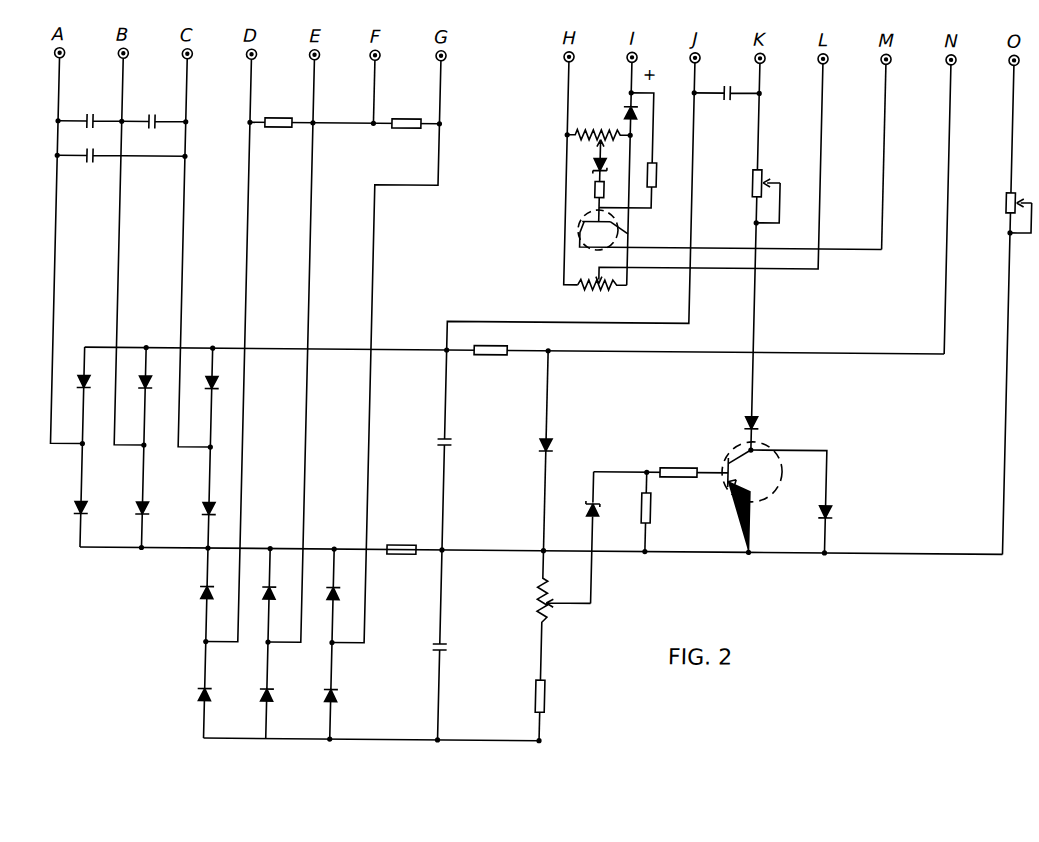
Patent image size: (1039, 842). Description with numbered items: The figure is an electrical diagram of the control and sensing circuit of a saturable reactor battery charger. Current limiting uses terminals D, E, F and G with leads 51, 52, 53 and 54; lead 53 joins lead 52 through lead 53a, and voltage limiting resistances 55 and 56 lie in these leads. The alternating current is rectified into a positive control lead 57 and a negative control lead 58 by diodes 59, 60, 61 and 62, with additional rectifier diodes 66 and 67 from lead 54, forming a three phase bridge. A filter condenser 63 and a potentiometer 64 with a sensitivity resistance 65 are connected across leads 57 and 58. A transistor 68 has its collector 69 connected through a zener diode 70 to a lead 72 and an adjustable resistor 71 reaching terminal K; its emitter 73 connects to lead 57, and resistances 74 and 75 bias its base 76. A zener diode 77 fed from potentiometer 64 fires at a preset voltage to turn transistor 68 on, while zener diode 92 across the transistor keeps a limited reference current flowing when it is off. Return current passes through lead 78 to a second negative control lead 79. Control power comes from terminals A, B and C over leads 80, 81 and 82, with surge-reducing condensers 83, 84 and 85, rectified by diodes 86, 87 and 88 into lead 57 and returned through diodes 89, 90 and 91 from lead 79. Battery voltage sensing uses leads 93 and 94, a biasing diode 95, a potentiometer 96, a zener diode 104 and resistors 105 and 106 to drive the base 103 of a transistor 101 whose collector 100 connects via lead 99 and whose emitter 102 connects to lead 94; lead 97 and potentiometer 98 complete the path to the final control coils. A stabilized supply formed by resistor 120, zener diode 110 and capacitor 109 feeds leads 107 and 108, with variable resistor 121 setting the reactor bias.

The lead 51 is at (244, 170).
The lead 52 is at (306, 185).
The lead 53 is at (367, 87).
The lead 53a is at (346, 126).
The lead 54 is at (433, 160).
The voltage limiting resistance 55 is at (276, 130).
The voltage limiting resistance 56 is at (396, 130).
The positive control lead 57 is at (478, 552).
The negative control lead 58 is at (310, 742).
The diode 59 is at (205, 592).
The diode 60 is at (270, 592).
The diode 61 is at (267, 697).
The diode 62 is at (204, 697).
The filter condenser 63 is at (450, 653).
The potentiometer 64 is at (541, 604).
The resistance 65 is at (542, 693).
The rectifier diode 66 is at (334, 592).
The rectifier diode 67 is at (331, 697).
The transistor 68 is at (785, 470).
The collector 69 is at (737, 452).
The zener diode 70 is at (758, 417).
The resistor 71 is at (746, 189).
The lead 72 is at (752, 312).
The emitter 73 is at (740, 491).
The resistance 74 is at (643, 508).
The resistance 75 is at (678, 476).
The base 76 is at (732, 472).
The zener diode 77 is at (590, 512).
The lead 78 is at (580, 322).
The second negative control lead 79 is at (388, 352).
The lead 80 is at (50, 240).
The lead 81 is at (114, 240).
The lead 82 is at (178, 240).
The condenser 83 is at (80, 120).
The condenser 84 is at (149, 121).
The condenser 85 is at (82, 163).
The diode 86 is at (78, 516).
The diode 87 is at (141, 516).
The diode 88 is at (207, 516).
The diode 89 is at (86, 391).
The diode 90 is at (148, 391).
The diode 91 is at (209, 391).
The zener diode 92 is at (834, 506).
The lead 93 is at (561, 86).
The lead 94 is at (624, 81).
The biasing diode 95 is at (618, 112).
The potentiometer 96 is at (588, 147).
The lead 97 is at (815, 188).
The potentiometer 98 is at (602, 294).
The lead 99 is at (878, 188).
The collector 100 is at (575, 231).
The transistor 101 is at (578, 221).
The emitter 102 is at (612, 228).
The base 103 is at (598, 230).
The zener diode 104 is at (586, 168).
The resistor 105 is at (589, 189).
The resistor 106 is at (652, 176).
The lead 107 is at (688, 351).
The lead 108 is at (934, 552).
The capacitor 109 is at (450, 437).
The zener diode 110 is at (553, 444).
The resistor 120 is at (484, 356).
The variable resistor 121 is at (1000, 203).